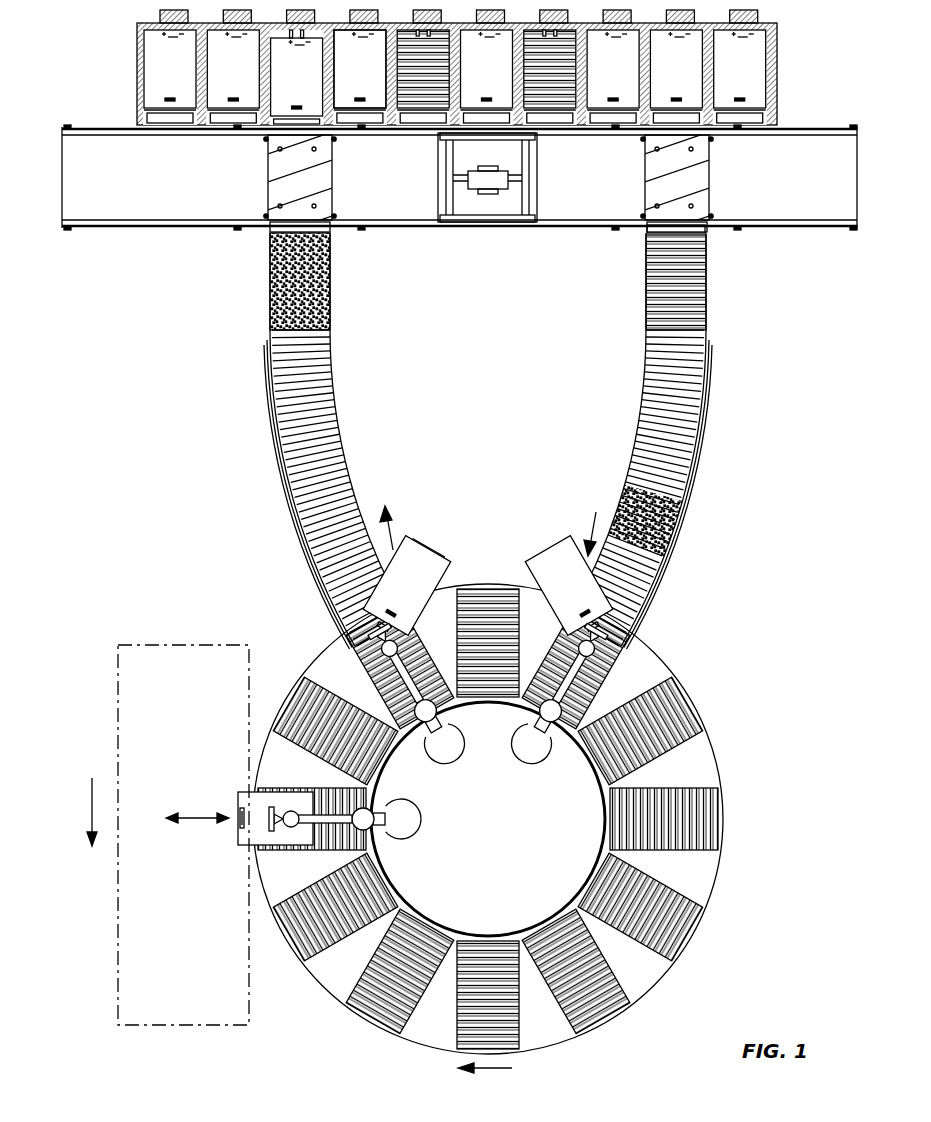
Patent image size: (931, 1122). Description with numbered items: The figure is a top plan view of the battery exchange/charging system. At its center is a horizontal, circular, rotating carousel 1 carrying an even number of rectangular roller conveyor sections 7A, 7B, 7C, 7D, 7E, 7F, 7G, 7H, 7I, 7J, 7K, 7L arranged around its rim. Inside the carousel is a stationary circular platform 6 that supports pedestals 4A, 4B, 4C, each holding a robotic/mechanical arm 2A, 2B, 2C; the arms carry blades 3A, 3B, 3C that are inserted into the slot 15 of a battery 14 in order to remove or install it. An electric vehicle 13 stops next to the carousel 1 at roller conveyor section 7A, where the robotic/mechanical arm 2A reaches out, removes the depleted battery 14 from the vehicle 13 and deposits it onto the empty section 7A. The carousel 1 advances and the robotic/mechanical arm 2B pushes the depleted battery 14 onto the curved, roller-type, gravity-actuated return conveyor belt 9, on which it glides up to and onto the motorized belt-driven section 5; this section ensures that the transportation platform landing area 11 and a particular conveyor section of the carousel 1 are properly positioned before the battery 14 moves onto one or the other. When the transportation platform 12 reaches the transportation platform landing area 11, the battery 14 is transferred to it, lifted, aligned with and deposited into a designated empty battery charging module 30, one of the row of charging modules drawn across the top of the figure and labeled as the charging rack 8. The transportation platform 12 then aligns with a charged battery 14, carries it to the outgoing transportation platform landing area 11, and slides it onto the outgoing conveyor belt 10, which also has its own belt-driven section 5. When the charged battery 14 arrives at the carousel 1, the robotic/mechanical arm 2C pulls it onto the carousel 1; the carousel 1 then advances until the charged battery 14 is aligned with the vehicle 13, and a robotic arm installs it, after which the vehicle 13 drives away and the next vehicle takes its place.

The carousel 1 is at (715, 874).
The robotic/mechanical arm 2A is at (374, 809).
The robotic/mechanical arm 2B is at (438, 714).
The robotic/mechanical arm 2C is at (540, 732).
The blade 3A is at (270, 812).
The blade 3B is at (390, 636).
The blade 3C is at (612, 645).
The pedestal 4A is at (410, 826).
The pedestal 4B is at (446, 760).
The pedestal 4C is at (528, 758).
The belt-driven section 5 is at (278, 285).
The stationary circular platform 6 is at (474, 894).
The roller conveyor section 7A is at (316, 847).
The roller conveyor section 7B is at (276, 733).
The roller conveyor section 7C is at (372, 662).
The roller conveyor section 7D is at (456, 598).
The roller conveyor section 7E is at (578, 625).
The roller conveyor section 7F is at (686, 700).
The roller conveyor section 7G is at (720, 818).
The roller conveyor section 7H is at (700, 928).
The roller conveyor section 7I is at (622, 986).
The roller conveyor section 7J is at (518, 1030).
The roller conveyor section 7K is at (400, 1022).
The roller conveyor section 7L is at (292, 930).
The battery storage rack 8 is at (474, 87).
The return conveyor belt 9 is at (354, 441).
The outgoing conveyor belt 10 is at (636, 418).
The transportation platform landing area 11 is at (285, 180).
The transportation platform 12 is at (537, 190).
The electric vehicle 13 is at (118, 745).
The battery 14 is at (372, 88).
The slot 15 is at (372, 608).
The battery charging module 30 is at (550, 100).